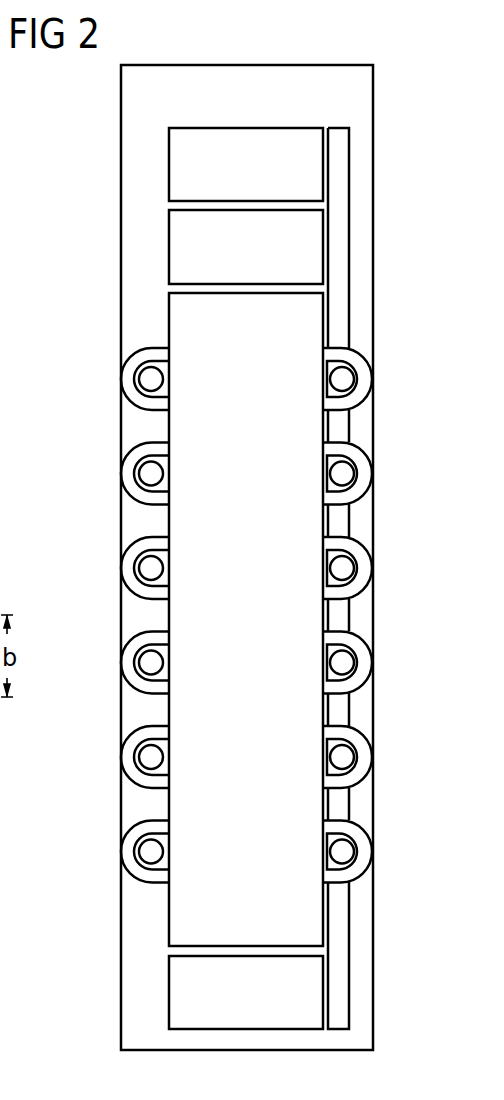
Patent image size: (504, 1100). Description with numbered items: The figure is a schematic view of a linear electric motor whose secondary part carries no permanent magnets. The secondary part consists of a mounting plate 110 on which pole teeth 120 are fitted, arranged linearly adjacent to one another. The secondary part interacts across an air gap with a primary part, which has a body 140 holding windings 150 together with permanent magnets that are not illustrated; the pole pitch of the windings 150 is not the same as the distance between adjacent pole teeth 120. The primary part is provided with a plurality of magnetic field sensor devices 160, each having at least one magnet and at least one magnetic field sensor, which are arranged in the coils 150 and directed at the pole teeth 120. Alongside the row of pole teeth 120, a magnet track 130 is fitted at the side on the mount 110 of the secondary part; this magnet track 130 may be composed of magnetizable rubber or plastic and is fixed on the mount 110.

The mounting plate 110 is at (355, 97).
The pole teeth 120 is at (183, 177).
The magnet track 130 is at (338, 253).
The body 140 is at (303, 919).
The windings 150 is at (363, 763).
The magnetic field sensor devices 160 is at (343, 667).